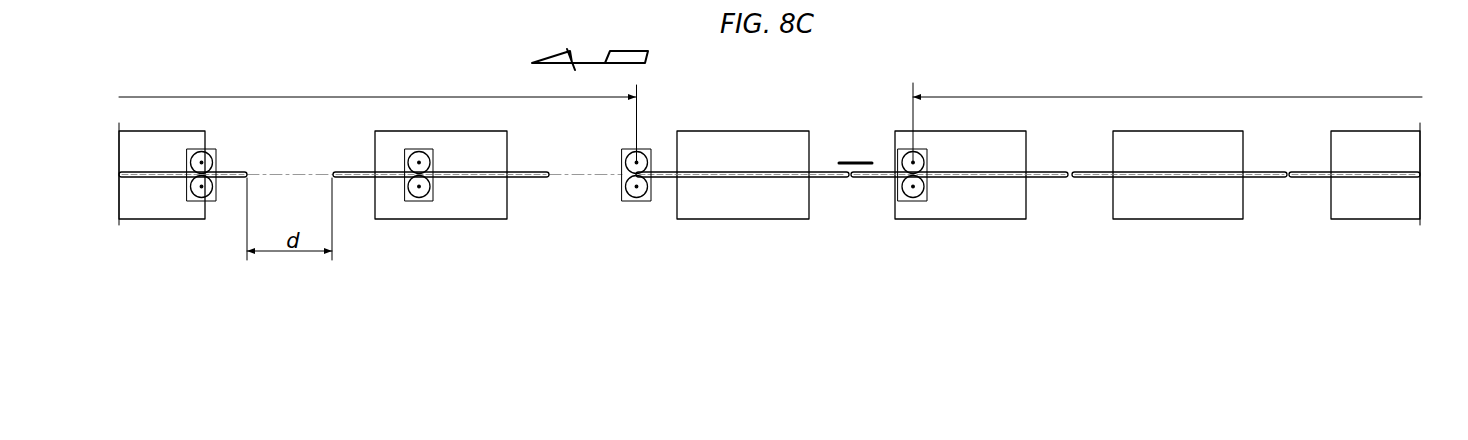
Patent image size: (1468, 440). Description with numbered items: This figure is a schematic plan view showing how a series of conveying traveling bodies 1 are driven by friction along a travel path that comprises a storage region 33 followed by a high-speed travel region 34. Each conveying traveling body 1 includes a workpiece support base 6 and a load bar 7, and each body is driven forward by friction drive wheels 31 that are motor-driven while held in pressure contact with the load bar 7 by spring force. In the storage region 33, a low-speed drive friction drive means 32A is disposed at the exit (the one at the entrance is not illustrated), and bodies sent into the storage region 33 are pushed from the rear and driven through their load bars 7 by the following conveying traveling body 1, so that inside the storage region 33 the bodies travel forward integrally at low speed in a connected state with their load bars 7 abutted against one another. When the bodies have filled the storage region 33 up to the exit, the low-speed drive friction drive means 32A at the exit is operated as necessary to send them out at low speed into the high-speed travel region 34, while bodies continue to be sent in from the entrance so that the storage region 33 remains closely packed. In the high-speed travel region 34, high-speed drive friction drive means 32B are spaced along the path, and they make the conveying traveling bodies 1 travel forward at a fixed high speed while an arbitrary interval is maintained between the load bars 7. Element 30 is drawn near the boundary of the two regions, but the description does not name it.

The conveying traveling body 1 is at (208, 137).
The workpiece support base 6 is at (506, 210).
The load bar 7 is at (152, 170).
The cutter blade 30 is at (857, 158).
The friction drive wheel 31 is at (407, 188).
The low-speed drive friction drive means 32A is at (913, 205).
The high-speed drive friction drive means 32B is at (185, 190).
The storage region 33 is at (1167, 118).
The high-speed travel region 34 is at (378, 117).